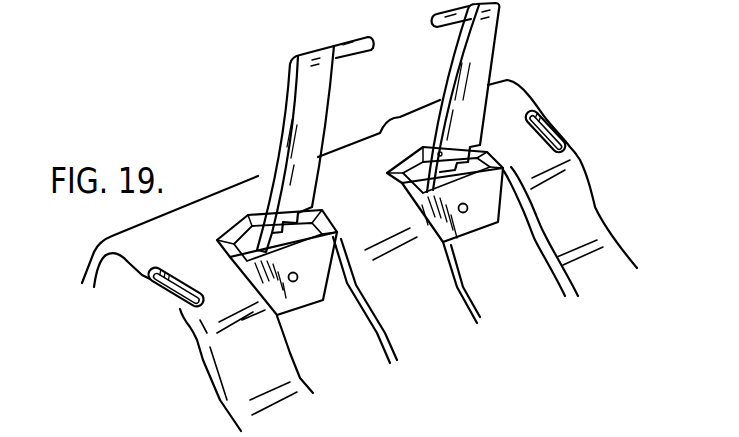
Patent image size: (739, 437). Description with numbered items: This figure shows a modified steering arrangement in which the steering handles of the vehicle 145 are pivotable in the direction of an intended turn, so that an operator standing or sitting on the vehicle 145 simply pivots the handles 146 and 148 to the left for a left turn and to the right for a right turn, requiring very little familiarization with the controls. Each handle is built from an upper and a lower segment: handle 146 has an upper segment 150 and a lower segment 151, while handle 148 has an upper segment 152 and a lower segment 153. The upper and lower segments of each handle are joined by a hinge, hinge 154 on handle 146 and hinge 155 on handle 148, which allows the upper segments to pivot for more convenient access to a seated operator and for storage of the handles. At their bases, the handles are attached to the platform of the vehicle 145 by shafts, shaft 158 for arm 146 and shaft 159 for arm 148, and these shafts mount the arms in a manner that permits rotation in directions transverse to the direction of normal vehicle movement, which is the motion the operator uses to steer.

The vehicle 145 is at (190, 371).
The handle 146 is at (284, 144).
The handle 148 is at (480, 96).
The upper segment 150 is at (264, 149).
The lower segment 151 is at (305, 286).
The upper segment 152 is at (476, 97).
The lower segment 153 is at (508, 223).
The hinge 154 is at (272, 218).
The hinge 155 is at (440, 152).
The shaft 158 is at (297, 283).
The shaft 159 is at (467, 212).